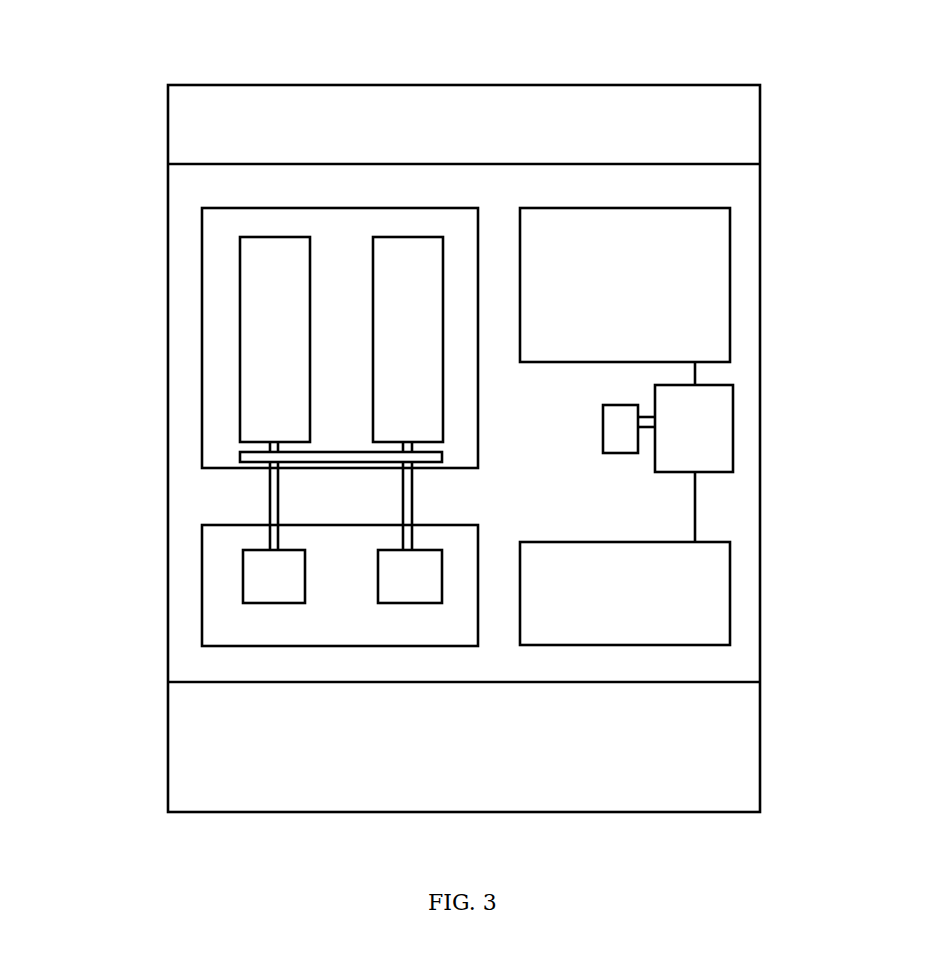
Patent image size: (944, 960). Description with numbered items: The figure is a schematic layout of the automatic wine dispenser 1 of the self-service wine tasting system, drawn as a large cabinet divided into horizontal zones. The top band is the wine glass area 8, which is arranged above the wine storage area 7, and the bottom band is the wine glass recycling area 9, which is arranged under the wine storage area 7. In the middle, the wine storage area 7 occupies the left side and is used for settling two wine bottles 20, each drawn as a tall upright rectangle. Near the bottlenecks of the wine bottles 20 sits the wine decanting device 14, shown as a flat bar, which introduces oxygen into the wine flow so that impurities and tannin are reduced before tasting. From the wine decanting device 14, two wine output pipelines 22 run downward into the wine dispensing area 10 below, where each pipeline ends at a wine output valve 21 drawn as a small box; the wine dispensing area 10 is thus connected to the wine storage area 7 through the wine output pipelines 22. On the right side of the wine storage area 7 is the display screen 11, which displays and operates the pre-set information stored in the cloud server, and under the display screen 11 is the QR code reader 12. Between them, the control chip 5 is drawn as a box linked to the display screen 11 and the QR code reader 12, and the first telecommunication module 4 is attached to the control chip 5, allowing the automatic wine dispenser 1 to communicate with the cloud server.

The automatic wine dispenser 1 is at (168, 422).
The first telecommunication module 4 is at (623, 415).
The control chip 5 is at (713, 443).
The wine storage area 7 is at (202, 315).
The wine glass area 8 is at (375, 122).
The wine glass recycling area 9 is at (212, 740).
The wine dispensing area 10 is at (202, 602).
The display screen 11 is at (730, 285).
The QR code reader 12 is at (683, 582).
The wine decanting device 14 is at (238, 457).
The wine bottle 20 is at (238, 278).
The wine output valve 21 is at (270, 557).
The wine output pipeline 22 is at (270, 495).